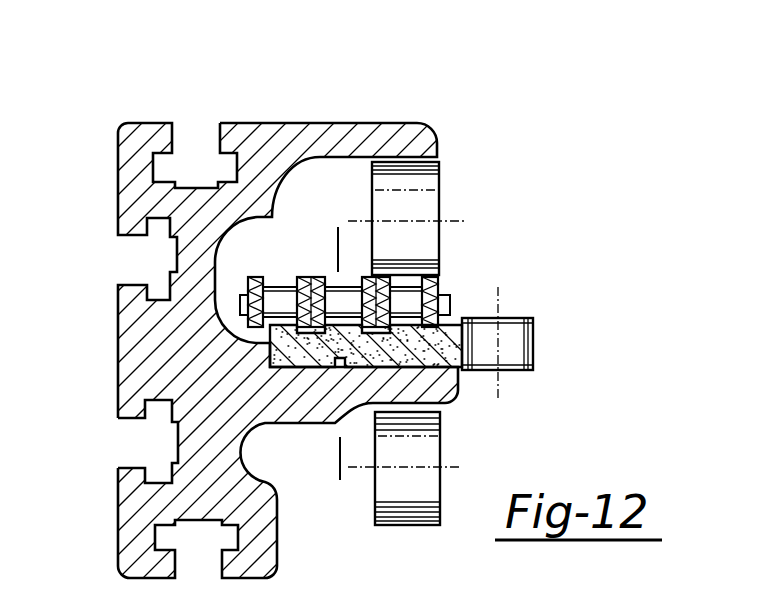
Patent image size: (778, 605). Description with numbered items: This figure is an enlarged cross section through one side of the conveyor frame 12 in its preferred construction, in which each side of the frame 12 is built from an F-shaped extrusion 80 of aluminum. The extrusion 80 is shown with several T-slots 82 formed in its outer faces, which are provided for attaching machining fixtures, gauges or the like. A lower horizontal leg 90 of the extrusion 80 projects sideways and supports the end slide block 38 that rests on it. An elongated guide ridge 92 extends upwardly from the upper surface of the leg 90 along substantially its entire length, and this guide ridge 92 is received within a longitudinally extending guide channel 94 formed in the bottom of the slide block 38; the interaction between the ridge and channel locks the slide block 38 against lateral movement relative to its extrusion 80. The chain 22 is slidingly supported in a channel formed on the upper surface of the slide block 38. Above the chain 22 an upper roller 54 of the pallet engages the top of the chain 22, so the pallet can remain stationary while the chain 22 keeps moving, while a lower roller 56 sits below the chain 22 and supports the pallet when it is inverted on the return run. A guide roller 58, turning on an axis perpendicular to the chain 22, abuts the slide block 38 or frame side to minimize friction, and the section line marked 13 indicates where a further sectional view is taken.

The frame 12 is at (343, 123).
The F-shaped extrusion 80 is at (262, 123).
The T-slot 82 is at (135, 468).
The slide block 38 is at (448, 349).
The chain 22 is at (440, 273).
The guide channel 94 is at (450, 303).
The upper roller 54 is at (432, 173).
The lower roller 56 is at (440, 503).
The guide roller 58 is at (533, 323).
The lower horizontal leg 90 is at (457, 393).
The guide ridge 92 is at (343, 366).
The section line 13- 13 is at (340, 465).